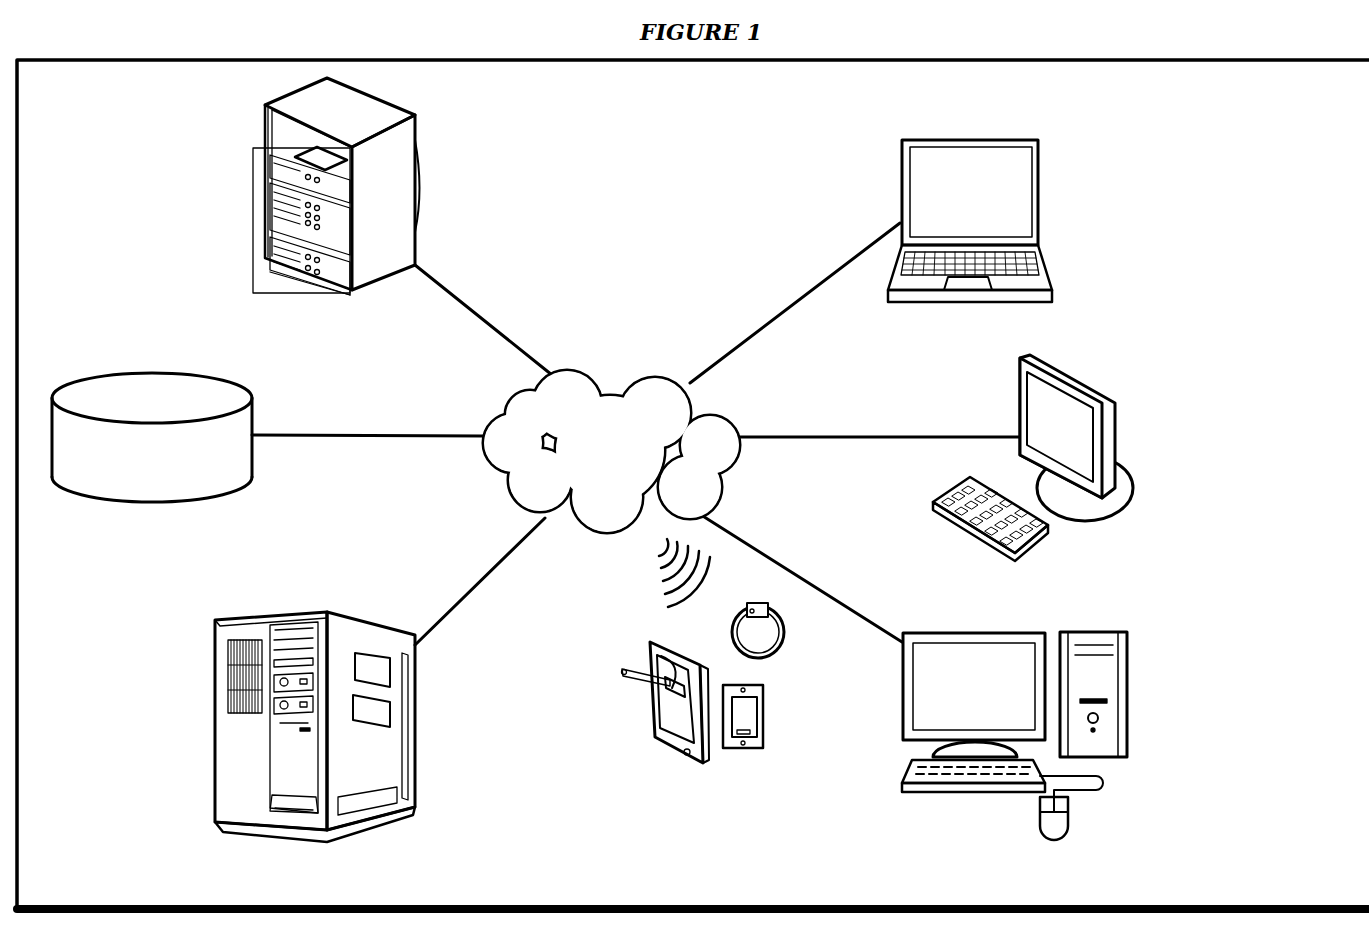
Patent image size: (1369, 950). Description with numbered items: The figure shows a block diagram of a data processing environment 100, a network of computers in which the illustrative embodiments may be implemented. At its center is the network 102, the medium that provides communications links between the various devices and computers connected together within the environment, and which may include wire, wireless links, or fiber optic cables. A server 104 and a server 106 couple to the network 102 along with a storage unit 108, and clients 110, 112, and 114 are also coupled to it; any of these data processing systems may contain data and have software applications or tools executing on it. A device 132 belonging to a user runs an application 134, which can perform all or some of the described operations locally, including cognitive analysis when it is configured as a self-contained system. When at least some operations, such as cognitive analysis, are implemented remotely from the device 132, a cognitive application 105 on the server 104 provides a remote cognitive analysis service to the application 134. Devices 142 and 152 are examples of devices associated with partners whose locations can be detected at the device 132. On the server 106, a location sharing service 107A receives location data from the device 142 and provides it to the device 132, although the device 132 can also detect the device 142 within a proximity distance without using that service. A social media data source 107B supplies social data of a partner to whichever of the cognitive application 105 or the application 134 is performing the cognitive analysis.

The data processing environment 100 is at (693, 485).
The network 102 is at (611, 451).
The server 104 is at (334, 196).
The cognitive application 105 is at (350, 166).
The server 106 is at (315, 741).
The location sharing service 107A is at (371, 653).
The social media data source 107B is at (390, 712).
The storage unit 108 is at (152, 437).
The client 110 is at (1043, 458).
The client 112 is at (1014, 736).
The client 114 is at (970, 221).
The device 132 is at (683, 716).
The application 134 is at (657, 658).
The device 142 is at (773, 716).
The device 152 is at (758, 636).